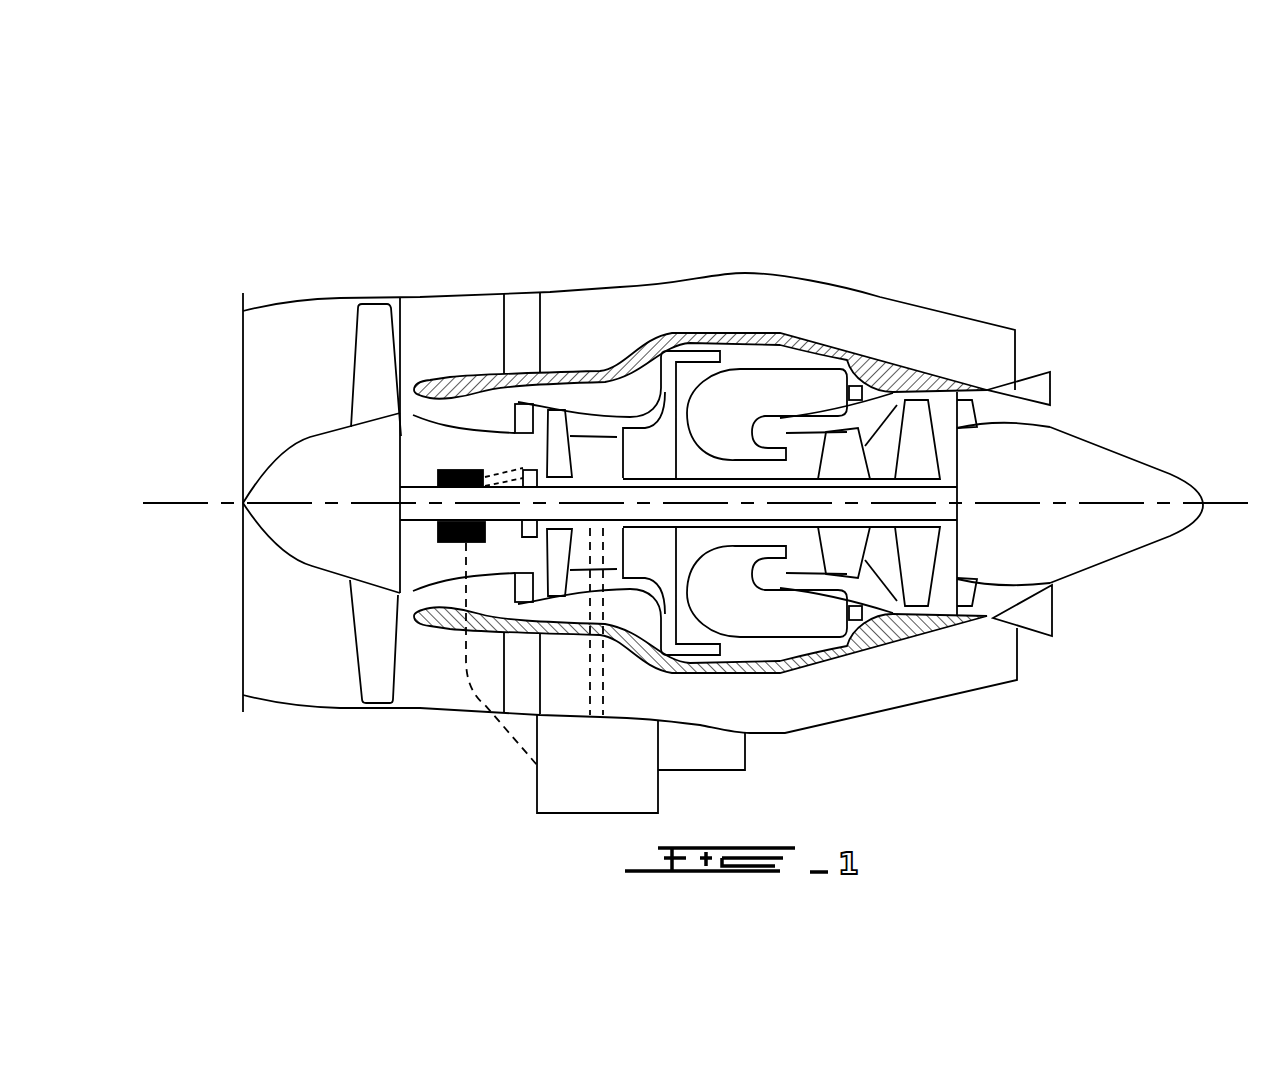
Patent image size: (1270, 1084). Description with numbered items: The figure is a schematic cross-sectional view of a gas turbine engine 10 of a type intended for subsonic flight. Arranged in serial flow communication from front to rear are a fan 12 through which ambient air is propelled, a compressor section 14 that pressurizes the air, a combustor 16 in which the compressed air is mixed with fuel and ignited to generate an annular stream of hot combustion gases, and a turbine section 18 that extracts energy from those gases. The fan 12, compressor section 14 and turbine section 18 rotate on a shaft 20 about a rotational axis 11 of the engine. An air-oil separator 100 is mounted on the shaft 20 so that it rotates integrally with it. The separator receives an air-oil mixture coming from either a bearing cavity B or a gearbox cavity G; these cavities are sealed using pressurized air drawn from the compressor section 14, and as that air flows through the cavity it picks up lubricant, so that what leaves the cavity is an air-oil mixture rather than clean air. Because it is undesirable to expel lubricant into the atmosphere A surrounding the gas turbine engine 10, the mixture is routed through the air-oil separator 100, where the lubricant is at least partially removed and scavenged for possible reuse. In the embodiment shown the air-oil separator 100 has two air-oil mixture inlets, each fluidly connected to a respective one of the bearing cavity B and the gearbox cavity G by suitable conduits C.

The gas turbine engine 10 is at (895, 237).
The rotational axis 11 is at (1233, 503).
The fan 12 is at (370, 632).
The compressor section 14 is at (588, 415).
The combustor 16 is at (770, 383).
The turbine section 18 is at (876, 560).
The shaft 20 is at (511, 680).
The air-oil separator 100 is at (402, 297).
The gearbox cavity G is at (613, 783).
The atmosphere A is at (1166, 181).
The bearing cavity B is at (517, 472).
The conduits C is at (517, 473).